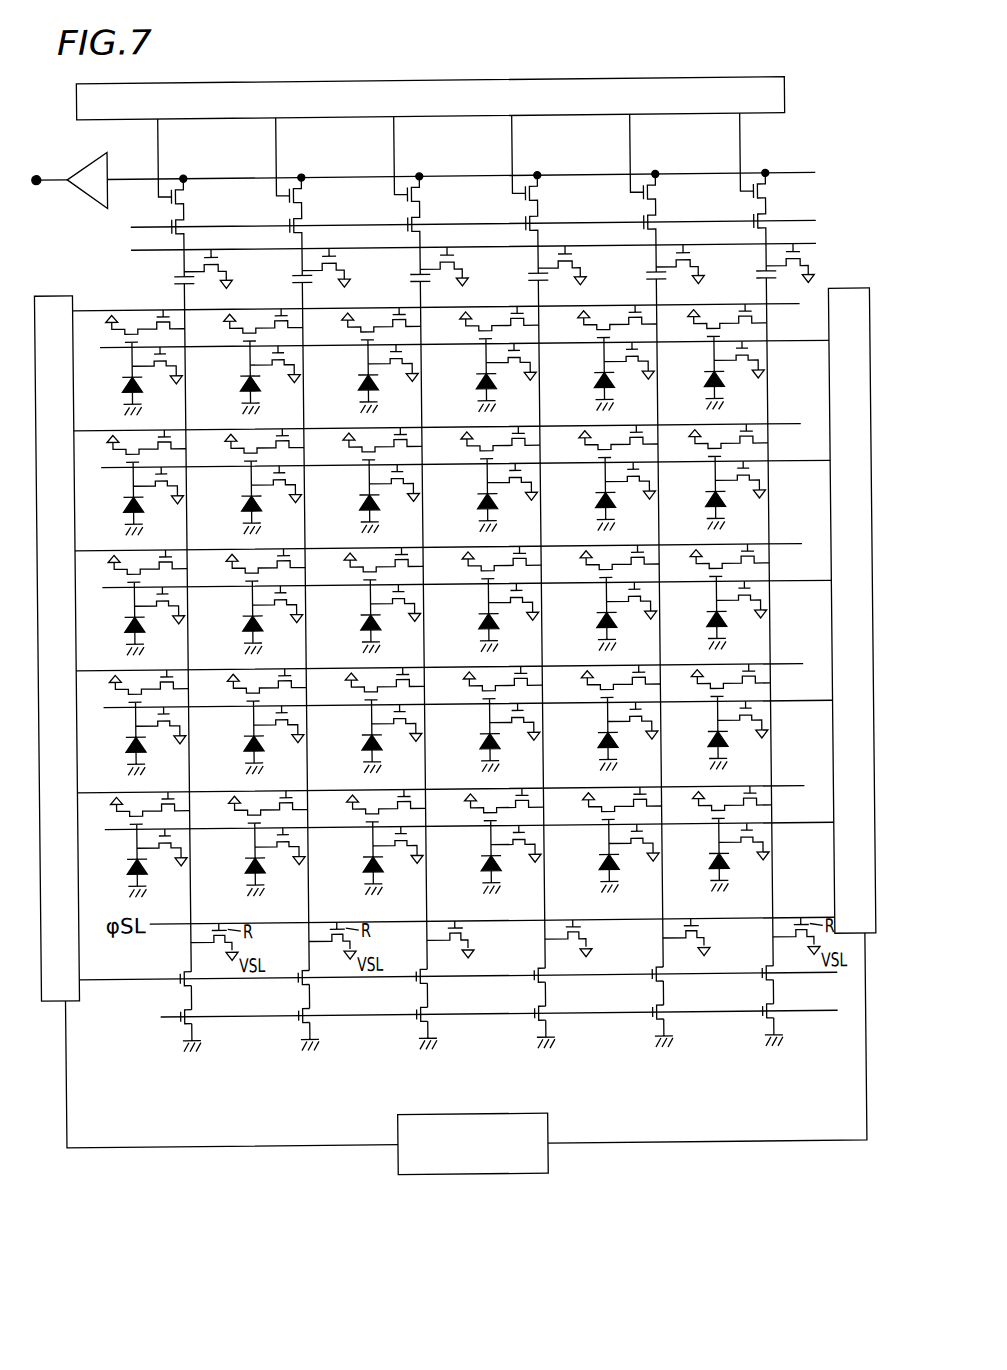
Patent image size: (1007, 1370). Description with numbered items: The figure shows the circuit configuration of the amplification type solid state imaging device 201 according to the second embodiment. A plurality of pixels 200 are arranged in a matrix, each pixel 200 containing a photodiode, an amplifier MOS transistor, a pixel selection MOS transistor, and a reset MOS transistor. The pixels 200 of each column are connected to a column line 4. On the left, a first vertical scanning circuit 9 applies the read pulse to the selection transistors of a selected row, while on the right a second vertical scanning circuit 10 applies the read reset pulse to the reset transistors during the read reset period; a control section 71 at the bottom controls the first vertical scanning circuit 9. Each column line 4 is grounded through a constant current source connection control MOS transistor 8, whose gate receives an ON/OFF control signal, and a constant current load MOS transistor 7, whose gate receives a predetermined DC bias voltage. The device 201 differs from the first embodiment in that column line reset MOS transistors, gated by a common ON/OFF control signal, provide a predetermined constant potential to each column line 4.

The amplification type solid state imaging device 201 is at (816, 85).
The pixel 200 is at (114, 828).
The column line 4 is at (793, 889).
The constant current source connection control MOS transistor 8 is at (757, 984).
The constant current load MOS transistor 7 is at (757, 1022).
The first vertical scanning circuit 9 is at (67, 1000).
The second vertical scanning circuit 10 is at (866, 940).
The control section 71 is at (468, 1176).